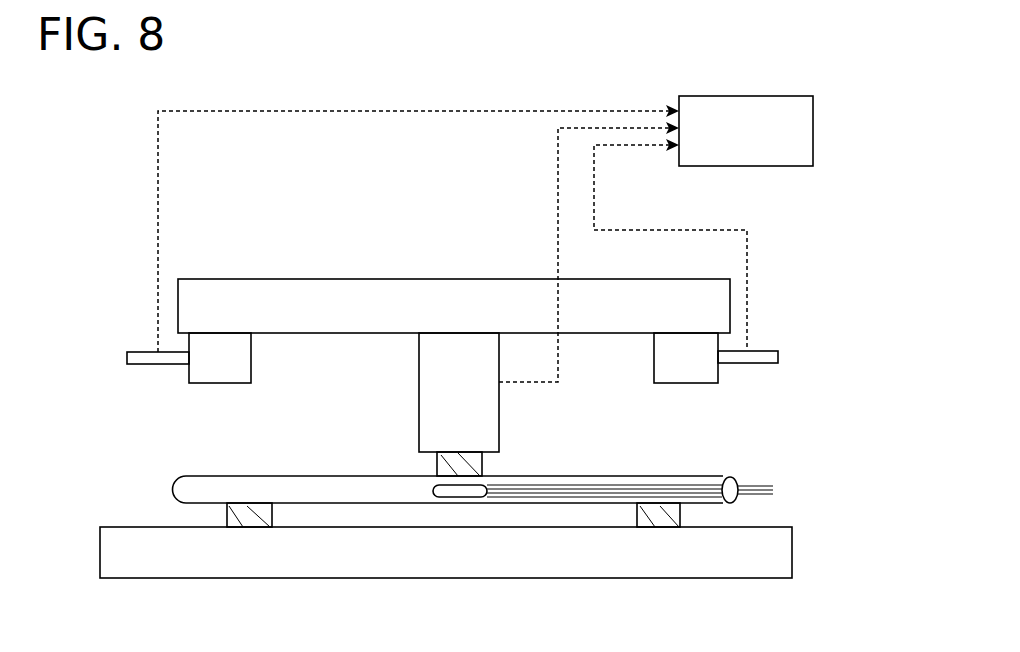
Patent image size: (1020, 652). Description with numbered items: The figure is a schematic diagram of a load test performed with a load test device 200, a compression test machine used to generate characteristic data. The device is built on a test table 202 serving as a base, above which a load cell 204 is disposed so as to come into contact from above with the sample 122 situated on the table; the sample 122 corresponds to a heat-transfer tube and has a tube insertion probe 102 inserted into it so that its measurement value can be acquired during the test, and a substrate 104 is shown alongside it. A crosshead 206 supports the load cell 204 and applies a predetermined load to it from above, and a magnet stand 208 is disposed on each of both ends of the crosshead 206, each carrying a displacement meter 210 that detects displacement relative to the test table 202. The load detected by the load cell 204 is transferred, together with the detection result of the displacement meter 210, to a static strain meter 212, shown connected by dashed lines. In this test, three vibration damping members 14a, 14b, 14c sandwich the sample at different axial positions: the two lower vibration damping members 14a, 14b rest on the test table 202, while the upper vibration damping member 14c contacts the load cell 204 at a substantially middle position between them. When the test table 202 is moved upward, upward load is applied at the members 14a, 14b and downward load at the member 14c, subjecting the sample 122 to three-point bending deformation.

The load test device 200 is at (843, 54).
The static strain meter 212 is at (813, 128).
The crosshead 206 is at (445, 279).
The magnet stand 208 is at (251, 368).
The displacement meter 210 is at (127, 358).
The load cell 204 is at (499, 425).
The upper vibration damping member 14c is at (437, 466).
The substrate / sample plate 104 is at (755, 487).
The sample 122 is at (711, 476).
The tube insertion probe 102 is at (487, 497).
The lower vibration damping member 14a is at (225, 520).
The lower vibration damping member 14b is at (682, 510).
The test table 202 is at (792, 548).